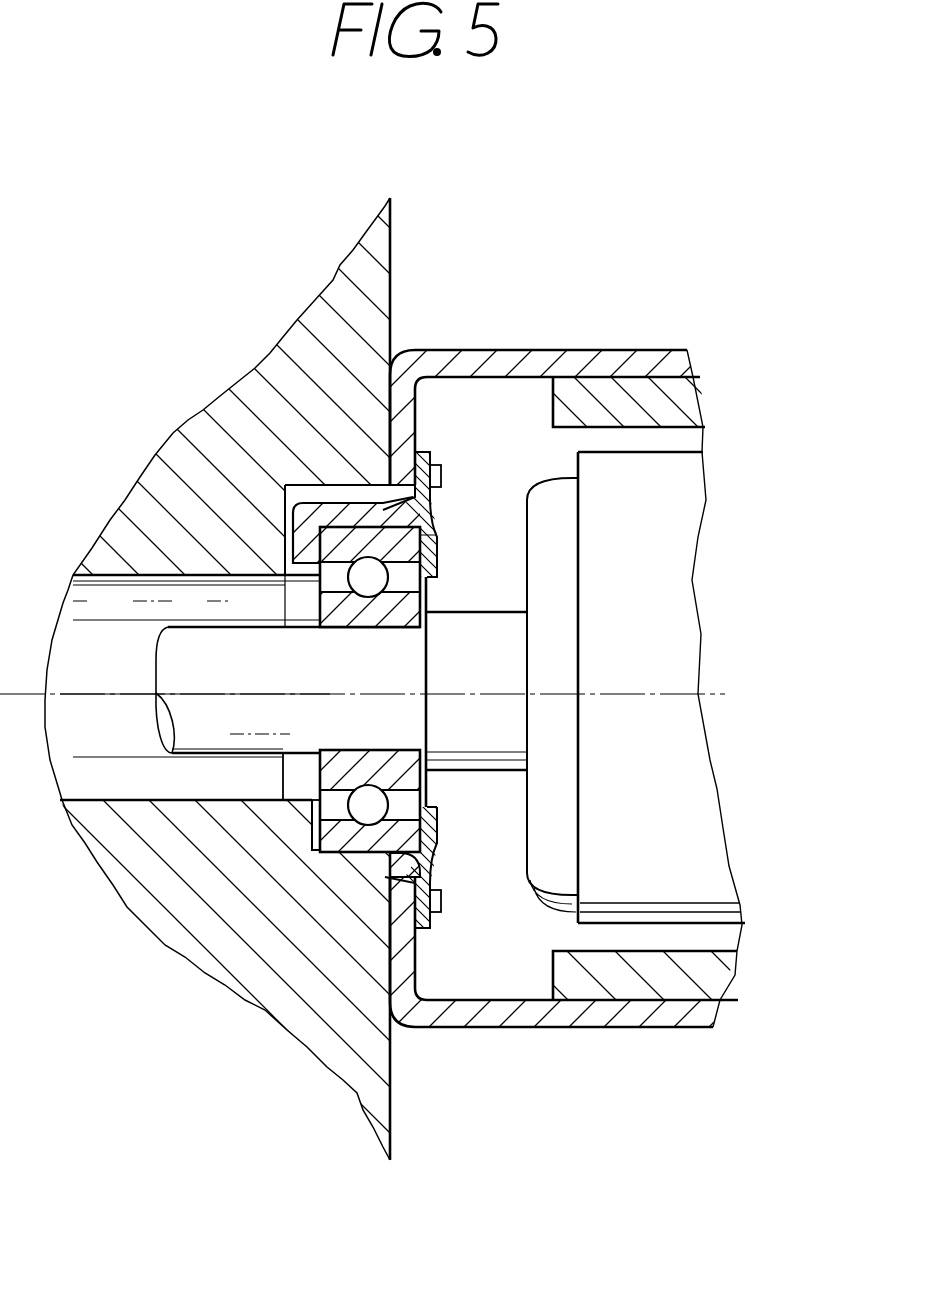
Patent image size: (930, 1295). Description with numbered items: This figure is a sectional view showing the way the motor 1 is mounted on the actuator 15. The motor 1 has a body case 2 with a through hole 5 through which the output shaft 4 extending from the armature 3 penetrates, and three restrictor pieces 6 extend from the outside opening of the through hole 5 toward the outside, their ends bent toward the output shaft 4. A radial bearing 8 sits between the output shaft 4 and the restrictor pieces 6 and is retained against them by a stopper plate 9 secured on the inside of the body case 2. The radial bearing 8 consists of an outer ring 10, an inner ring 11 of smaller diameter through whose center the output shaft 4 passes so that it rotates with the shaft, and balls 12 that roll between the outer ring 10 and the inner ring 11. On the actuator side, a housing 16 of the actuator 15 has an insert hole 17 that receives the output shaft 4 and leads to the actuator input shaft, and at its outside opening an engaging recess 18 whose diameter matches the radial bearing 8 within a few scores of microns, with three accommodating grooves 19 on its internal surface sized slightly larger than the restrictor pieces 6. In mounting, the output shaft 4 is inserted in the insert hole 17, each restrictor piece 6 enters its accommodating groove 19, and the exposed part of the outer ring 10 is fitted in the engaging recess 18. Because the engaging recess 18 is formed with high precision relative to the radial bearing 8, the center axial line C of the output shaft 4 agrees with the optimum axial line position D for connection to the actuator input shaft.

The motor 1 is at (579, 609).
The body case 2 is at (478, 362).
The armature 3 is at (680, 538).
The output shaft 4 is at (213, 645).
The through hole 5 is at (437, 862).
The restrictor piece 6 is at (300, 566).
The radial bearing 8 is at (332, 638).
The stopper plate 9 is at (435, 500).
The outer ring 10 is at (433, 545).
The inner ring 11 is at (417, 621).
The balls 12 is at (340, 746).
The actuator 15 is at (230, 677).
The housing 16 is at (267, 359).
The insert hole 17 is at (196, 669).
The engaging recess 18 is at (352, 852).
The accommodating groove 19 is at (293, 578).
The axial line C is at (187, 697).
The optimum axial line position D is at (130, 696).